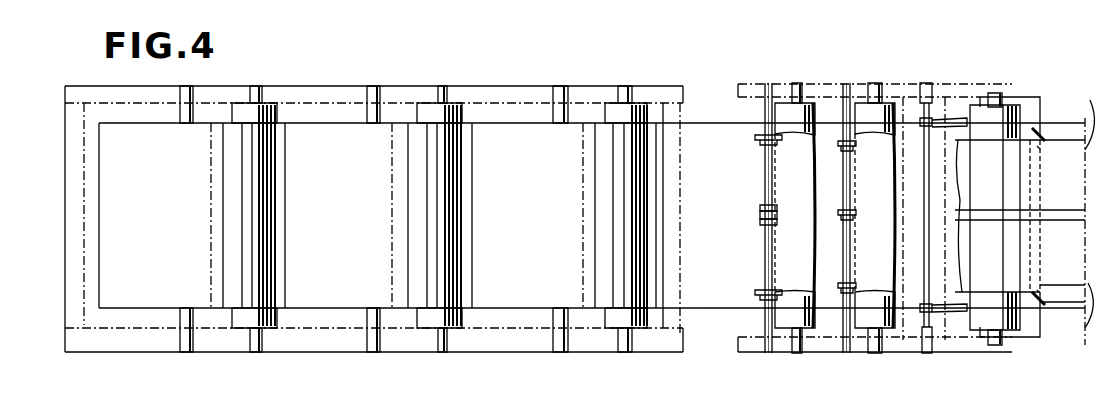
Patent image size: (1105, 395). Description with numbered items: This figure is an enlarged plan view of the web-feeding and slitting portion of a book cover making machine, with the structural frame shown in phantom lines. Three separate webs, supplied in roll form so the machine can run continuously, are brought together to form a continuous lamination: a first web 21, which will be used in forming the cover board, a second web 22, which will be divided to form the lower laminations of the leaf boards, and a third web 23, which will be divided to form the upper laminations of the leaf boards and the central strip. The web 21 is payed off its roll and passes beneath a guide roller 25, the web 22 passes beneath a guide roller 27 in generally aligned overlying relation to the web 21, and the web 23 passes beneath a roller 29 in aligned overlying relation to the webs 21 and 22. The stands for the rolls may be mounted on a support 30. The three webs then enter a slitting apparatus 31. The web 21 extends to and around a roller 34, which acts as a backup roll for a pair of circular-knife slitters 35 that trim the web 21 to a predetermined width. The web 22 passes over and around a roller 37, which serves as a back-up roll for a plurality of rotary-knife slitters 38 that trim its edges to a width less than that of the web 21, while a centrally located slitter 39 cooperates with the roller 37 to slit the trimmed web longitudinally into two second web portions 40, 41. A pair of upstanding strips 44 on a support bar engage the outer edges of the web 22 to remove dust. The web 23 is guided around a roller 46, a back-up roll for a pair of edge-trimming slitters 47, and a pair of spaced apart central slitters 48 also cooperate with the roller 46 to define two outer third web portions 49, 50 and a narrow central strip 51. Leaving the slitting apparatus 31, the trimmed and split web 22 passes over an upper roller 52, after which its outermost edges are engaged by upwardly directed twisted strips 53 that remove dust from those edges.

The first web 21 is at (140, 298).
The second web 22 is at (333, 298).
The third web 23 is at (530, 298).
The guide roller 25 is at (273, 316).
The guide roller 27 is at (460, 316).
The roller 29 is at (640, 328).
The support 30 is at (100, 353).
The slitting apparatus 31 is at (906, 70).
The roller 34 is at (948, 340).
The slitters 35 is at (940, 114).
The roller 37 is at (889, 332).
The slitters 38 is at (855, 148).
The centrally located slitter 39 is at (850, 213).
The second web portion 40 is at (952, 272).
The second web portion 41 is at (950, 200).
The upstanding strips 44 is at (1037, 148).
The roller 46 is at (818, 330).
The slitters 47 is at (766, 140).
The central slitters 48 is at (762, 221).
The third web portion 49 is at (797, 265).
The third web portion 50 is at (797, 190).
The central strip 51 is at (788, 220).
The upper roller 52 is at (1005, 113).
The twisted strips 53 is at (1038, 131).